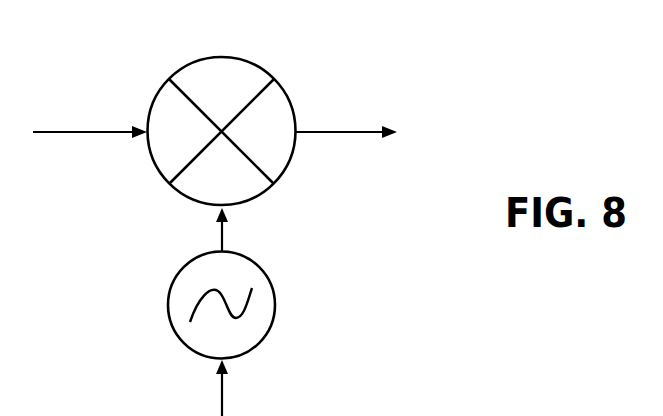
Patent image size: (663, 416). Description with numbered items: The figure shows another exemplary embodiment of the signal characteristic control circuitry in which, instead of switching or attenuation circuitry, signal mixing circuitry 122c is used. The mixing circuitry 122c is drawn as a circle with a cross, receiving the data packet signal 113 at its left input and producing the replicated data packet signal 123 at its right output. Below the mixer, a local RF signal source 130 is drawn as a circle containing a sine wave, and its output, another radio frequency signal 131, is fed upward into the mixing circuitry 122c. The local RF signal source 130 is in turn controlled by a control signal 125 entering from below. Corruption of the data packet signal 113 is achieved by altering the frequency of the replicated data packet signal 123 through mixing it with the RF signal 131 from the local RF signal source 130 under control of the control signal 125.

The signal mixing circuitry 122c is at (216, 57).
The data packet signal 113 is at (87, 132).
The replicated data packet signal 123 is at (323, 132).
The radio frequency signal 131 is at (222, 237).
The local RF signal source 130 is at (277, 303).
The control signal 125 is at (222, 403).